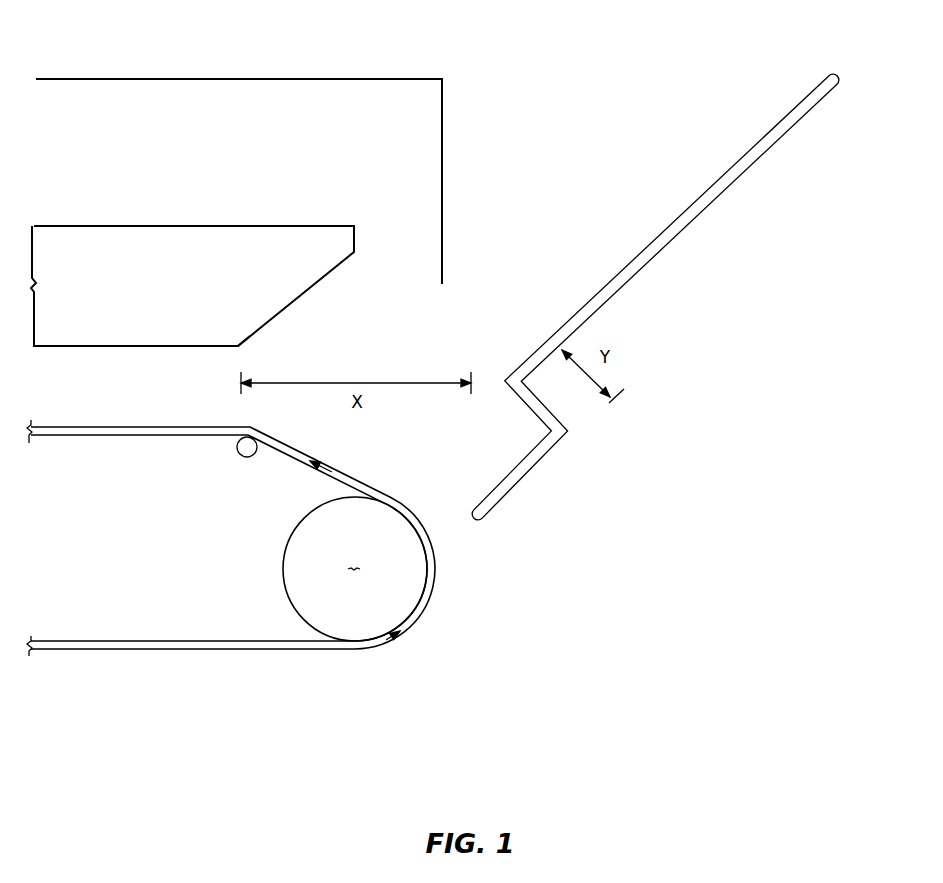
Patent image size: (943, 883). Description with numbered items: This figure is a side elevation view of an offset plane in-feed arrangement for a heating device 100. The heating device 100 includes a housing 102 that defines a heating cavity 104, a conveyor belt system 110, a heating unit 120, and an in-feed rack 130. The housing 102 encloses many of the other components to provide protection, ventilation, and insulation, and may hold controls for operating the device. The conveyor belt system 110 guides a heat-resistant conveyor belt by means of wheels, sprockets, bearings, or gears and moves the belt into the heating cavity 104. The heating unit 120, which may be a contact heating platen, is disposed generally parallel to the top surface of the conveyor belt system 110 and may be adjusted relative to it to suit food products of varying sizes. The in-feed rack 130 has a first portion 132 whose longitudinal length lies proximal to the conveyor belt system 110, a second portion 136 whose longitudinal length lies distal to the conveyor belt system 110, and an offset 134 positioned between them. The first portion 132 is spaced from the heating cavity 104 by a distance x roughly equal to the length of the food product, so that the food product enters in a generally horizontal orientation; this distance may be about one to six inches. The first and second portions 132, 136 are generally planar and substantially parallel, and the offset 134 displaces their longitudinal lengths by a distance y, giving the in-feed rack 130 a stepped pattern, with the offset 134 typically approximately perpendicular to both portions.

The heating device 100 is at (445, 660).
The housing 102 is at (288, 78).
The heating cavity 104 is at (243, 357).
The conveyor belt system 110 is at (225, 653).
The heating unit 120 is at (288, 225).
The in-feed rack 130 is at (645, 266).
The first portion 132 is at (545, 473).
The offset 134 is at (556, 413).
The second portion 136 is at (667, 225).